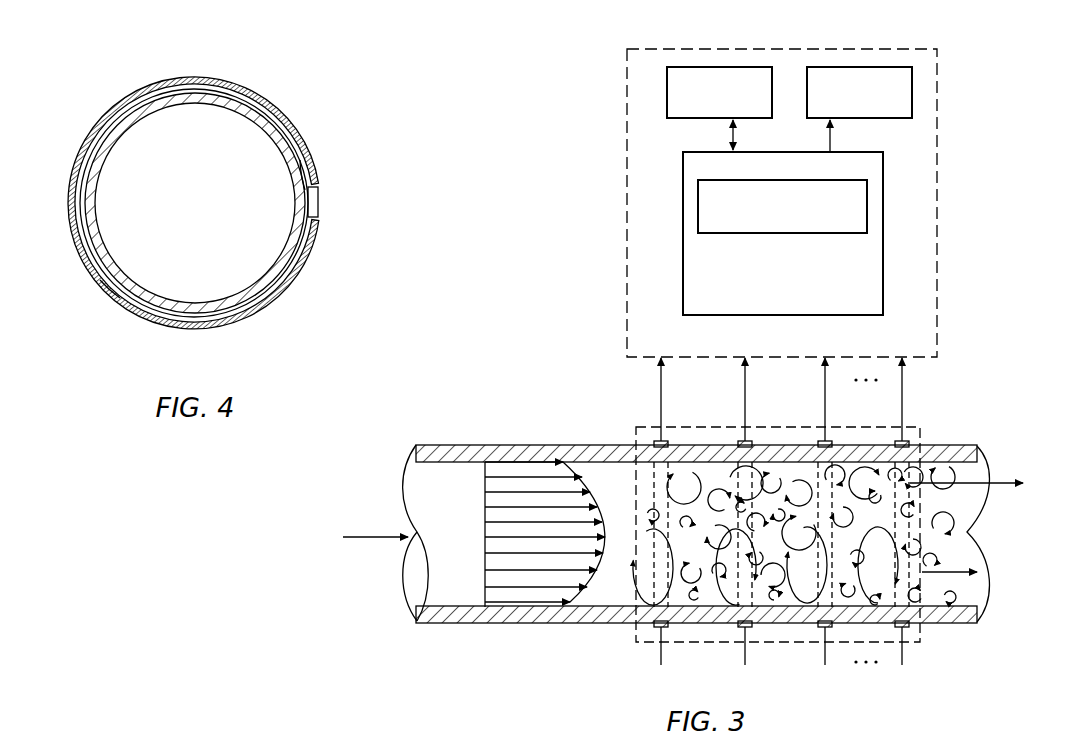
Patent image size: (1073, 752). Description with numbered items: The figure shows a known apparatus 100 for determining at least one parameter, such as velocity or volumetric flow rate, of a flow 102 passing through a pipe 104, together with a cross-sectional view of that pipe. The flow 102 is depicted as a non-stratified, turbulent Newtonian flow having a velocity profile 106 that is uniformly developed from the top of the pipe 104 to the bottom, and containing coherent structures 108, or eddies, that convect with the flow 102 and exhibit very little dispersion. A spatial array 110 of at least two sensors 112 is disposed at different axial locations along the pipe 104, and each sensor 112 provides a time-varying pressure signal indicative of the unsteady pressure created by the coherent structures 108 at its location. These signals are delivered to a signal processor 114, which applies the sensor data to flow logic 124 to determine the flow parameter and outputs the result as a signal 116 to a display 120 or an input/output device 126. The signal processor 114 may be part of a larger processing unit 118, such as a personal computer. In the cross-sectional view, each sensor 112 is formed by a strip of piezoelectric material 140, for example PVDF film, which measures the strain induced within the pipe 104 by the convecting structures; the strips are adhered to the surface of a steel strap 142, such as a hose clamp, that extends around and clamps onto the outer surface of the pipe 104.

In FIG. 4, the apparatus 100 is at (75, 112).
In FIG. 3, the flow 102 is at (373, 535).
In FIG. 4, the pipe 104 is at (296, 165).
In FIG. 3, the pipe 104 is at (515, 452).
In FIG. 3, the velocity profile 106 is at (507, 537).
In FIG. 3, the coherent structures 108 is at (942, 450).
In FIG. 4, the spatial array 110 is at (250, 82).
In FIG. 3, the spatial array 110 is at (630, 630).
In FIG. 4, the sensors 112 is at (259, 320).
In FIG. 3, the sensors 112 is at (658, 629).
In FIG. 3, the signal processor 114 is at (883, 213).
In FIG. 3, the signal 116 is at (733, 132).
In FIG. 3, the processing unit 118 is at (937, 163).
In FIG. 3, the display 120 is at (850, 67).
In FIG. 3, the flow logic 124 is at (847, 180).
In FIG. 3, the I/O device 126 is at (718, 67).
In FIG. 4, the strip of piezoelectric material 140 is at (112, 302).
In FIG. 4, the steel strap 142 is at (292, 140).